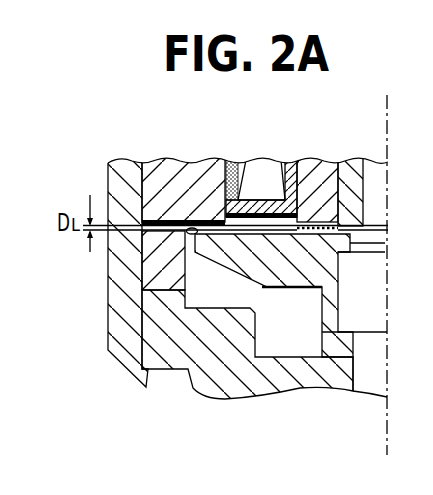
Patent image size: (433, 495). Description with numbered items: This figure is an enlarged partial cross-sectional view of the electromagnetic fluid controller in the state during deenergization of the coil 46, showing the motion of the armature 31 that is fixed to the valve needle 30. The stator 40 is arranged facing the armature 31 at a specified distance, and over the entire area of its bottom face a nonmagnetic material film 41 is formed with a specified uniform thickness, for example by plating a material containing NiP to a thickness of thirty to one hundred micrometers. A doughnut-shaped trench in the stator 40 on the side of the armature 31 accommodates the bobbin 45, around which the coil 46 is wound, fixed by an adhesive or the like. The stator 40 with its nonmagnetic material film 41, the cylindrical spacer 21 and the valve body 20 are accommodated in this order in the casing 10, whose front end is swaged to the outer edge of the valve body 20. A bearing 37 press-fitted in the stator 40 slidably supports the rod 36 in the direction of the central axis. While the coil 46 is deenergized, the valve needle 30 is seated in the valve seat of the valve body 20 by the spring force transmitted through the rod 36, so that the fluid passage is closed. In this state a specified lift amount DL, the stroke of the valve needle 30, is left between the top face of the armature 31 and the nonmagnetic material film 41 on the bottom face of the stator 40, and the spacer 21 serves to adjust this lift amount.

The casing 10 is at (110, 183).
The valve body 20 is at (160, 322).
The cylindrical spacer 21 is at (148, 272).
The valve needle 30 is at (348, 322).
The armature 31 is at (297, 273).
The rod 36 is at (377, 175).
The bearing 37 is at (347, 170).
The stator 40 is at (187, 173).
The nonmagnetic material film 41 is at (180, 193).
The bobbin 45 is at (291, 165).
The coil 46 is at (247, 172).